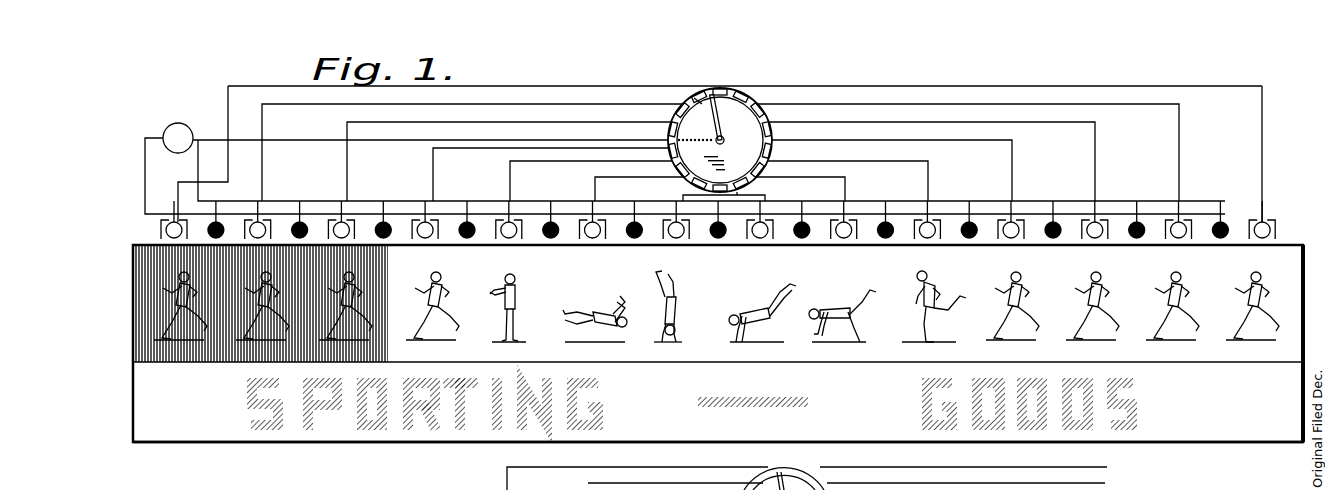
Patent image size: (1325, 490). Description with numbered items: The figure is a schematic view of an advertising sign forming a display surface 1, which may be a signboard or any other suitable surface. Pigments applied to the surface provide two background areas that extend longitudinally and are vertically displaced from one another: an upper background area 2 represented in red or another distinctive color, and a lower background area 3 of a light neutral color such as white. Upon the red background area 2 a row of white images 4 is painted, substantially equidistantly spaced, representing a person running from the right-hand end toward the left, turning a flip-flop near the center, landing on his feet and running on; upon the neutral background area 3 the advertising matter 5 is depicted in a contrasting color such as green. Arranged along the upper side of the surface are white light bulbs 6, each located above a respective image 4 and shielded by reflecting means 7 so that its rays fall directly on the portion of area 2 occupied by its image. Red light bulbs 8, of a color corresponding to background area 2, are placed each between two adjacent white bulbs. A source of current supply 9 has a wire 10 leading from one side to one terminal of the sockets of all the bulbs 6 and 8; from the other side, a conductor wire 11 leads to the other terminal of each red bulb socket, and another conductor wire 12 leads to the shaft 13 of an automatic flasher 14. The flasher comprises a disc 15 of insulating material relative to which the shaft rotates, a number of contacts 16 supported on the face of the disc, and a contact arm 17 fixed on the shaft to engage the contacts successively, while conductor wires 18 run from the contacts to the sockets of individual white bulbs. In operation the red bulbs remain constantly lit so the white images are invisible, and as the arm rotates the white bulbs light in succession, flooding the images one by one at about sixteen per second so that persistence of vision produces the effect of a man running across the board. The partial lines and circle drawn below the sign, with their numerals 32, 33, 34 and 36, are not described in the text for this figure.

The display surface 1 is at (1233, 418).
The background area 2 is at (1283, 252).
The background area 3 is at (1278, 425).
The images 4 is at (1243, 283).
The advertising matter 5 is at (495, 430).
The light bulbs 6 is at (1265, 223).
The shield 7 is at (1276, 222).
The light bulbs 8 is at (1225, 224).
The source of current supply 9 is at (180, 123).
The wire 10 is at (148, 177).
The conductor wire 11 is at (206, 140).
The conductor wire 12 is at (231, 146).
The shaft 13 is at (720, 96).
The automatic flasher 14 is at (752, 110).
The disc 15 is at (727, 105).
The contacts 16 is at (698, 100).
The contact arm 17 is at (700, 120).
The conductor wires 18 is at (552, 86).
The conductor 32 is at (828, 487).
The switch 33 is at (771, 477).
The switch arm 34 is at (797, 470).
The conductor 36 is at (683, 466).